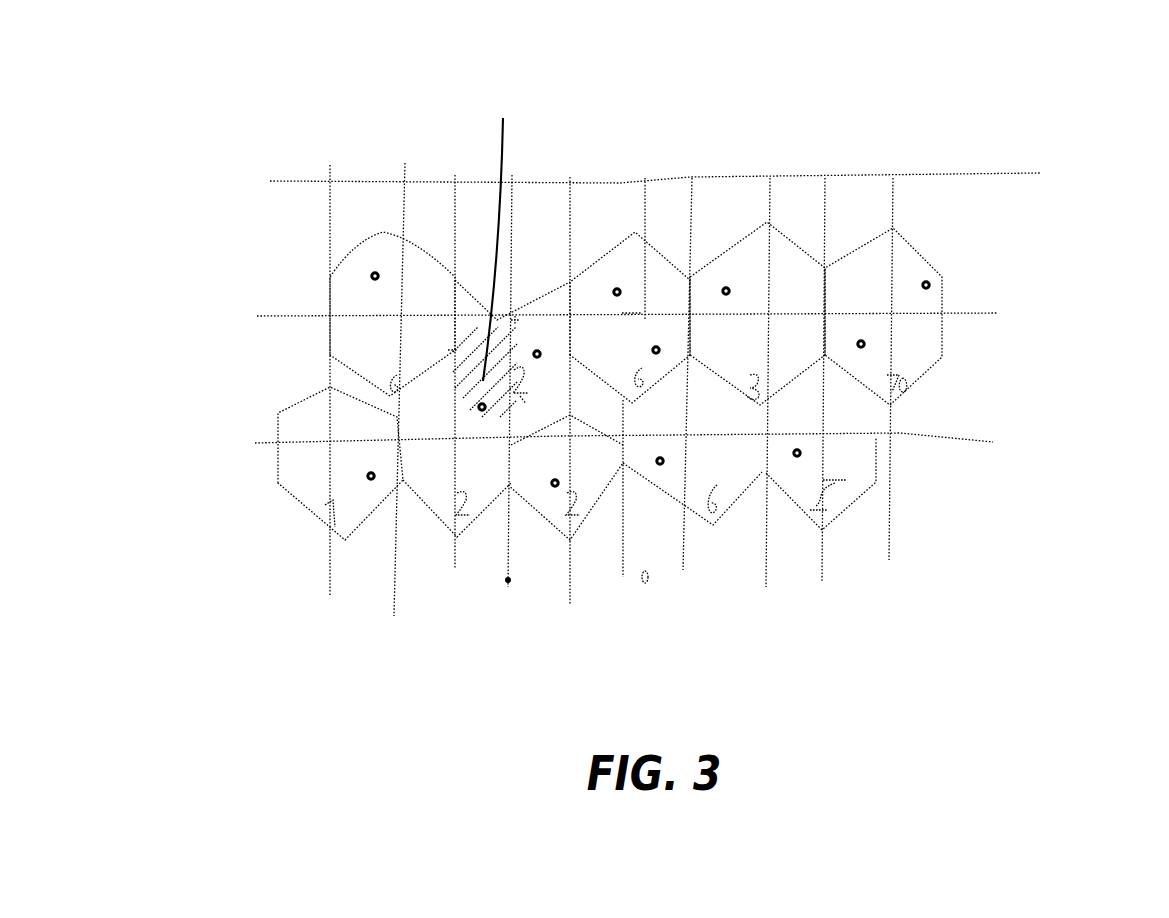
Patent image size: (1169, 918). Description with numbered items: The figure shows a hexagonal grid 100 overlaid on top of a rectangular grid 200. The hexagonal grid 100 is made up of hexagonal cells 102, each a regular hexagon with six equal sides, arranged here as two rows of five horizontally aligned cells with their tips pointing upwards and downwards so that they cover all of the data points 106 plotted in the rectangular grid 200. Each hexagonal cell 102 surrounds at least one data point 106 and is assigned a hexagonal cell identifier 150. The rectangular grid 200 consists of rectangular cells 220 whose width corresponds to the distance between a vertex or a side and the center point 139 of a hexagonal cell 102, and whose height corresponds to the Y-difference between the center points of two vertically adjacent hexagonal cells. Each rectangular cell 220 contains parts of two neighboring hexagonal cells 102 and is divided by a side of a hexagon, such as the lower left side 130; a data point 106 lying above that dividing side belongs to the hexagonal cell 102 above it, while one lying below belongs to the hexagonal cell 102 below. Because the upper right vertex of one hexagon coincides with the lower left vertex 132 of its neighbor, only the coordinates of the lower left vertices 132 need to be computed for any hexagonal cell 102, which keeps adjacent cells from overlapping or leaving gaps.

The hexagonal grid 100 is at (290, 272).
The hexagonal cell 102 is at (940, 337).
The data point 106 is at (481, 412).
The lower left side 130 is at (500, 217).
The lower left vertex 132 is at (453, 350).
The center point 139 is at (632, 317).
The hexagonal cell identifier 150 is at (722, 505).
The rectangular grid 200 is at (372, 164).
The rectangular cell 220 is at (497, 316).